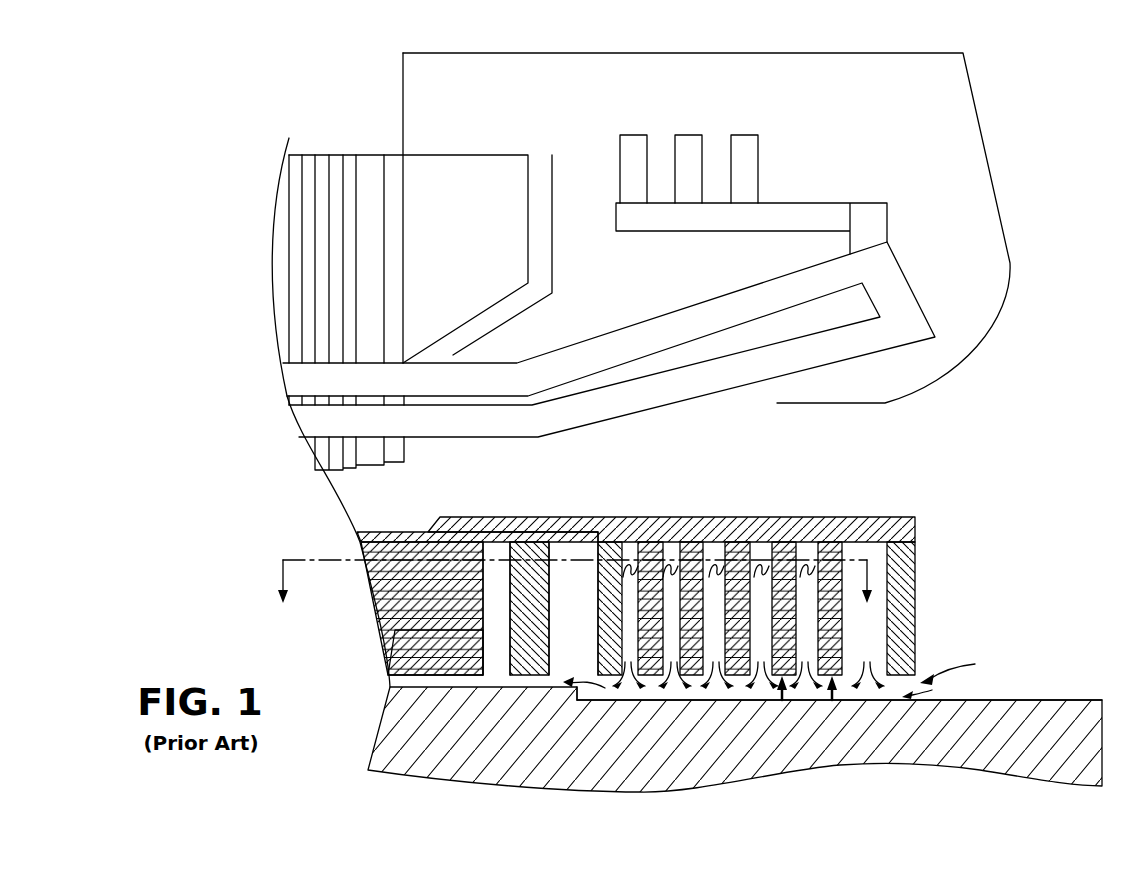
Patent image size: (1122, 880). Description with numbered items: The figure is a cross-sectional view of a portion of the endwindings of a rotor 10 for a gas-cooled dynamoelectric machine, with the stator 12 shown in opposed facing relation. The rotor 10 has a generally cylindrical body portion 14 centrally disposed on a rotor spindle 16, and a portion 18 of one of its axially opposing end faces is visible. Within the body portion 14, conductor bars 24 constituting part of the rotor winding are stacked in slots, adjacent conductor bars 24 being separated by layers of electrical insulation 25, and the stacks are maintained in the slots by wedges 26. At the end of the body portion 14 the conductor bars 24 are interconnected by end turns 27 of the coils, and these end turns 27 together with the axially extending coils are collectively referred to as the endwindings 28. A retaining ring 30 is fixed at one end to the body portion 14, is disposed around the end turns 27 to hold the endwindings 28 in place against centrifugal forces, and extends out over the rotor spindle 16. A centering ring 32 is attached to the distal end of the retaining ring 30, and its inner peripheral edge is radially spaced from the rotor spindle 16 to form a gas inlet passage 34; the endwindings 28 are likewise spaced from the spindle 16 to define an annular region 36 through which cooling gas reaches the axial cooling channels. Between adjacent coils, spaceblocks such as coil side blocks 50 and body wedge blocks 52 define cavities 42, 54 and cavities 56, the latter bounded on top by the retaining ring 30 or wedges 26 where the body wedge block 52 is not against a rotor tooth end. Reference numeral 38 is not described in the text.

The rotor 10 is at (689, 643).
The stator 12 is at (1025, 188).
The body portion 14 is at (392, 709).
The rotor spindle 16 is at (885, 753).
The portion of end face 18 is at (580, 702).
The conductor bars 24 is at (400, 653).
The layers of electrical insulation 25 is at (386, 608).
The wedges 26 is at (360, 540).
The end turns 27 is at (693, 684).
The endwindings 28 is at (832, 700).
The retaining ring 30 is at (681, 521).
The centering ring 32 is at (905, 594).
The gas inlet passage 34 is at (954, 676).
The annular region 36 is at (757, 688).
The gap 38 is at (497, 680).
The cavities 42 is at (805, 553).
The coil side blocks 50 is at (612, 553).
The body wedge blocks 52 is at (530, 553).
The cavities 54 is at (573, 553).
The cavities 56 is at (494, 553).